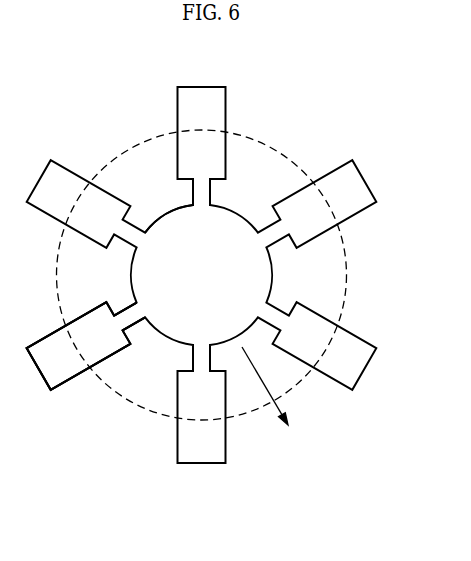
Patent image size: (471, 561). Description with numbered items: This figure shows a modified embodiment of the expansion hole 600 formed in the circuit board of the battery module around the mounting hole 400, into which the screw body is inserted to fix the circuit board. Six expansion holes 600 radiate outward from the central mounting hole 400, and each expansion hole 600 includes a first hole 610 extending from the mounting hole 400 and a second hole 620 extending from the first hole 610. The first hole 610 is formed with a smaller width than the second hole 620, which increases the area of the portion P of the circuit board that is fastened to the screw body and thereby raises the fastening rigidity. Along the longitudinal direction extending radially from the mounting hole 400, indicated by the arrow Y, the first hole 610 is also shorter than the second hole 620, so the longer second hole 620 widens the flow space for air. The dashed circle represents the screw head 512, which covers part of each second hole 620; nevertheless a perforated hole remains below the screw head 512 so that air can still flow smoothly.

The mounting hole 400 is at (253, 273).
The screw head 512 is at (265, 145).
The expansion hole 600 is at (100, 465).
The first hole 610 is at (137, 320).
The second hole 620 is at (68, 368).
The portion of the circuit board fastened to the screw body P is at (166, 210).
The arrow indicating longitudinal direction Y is at (270, 401).